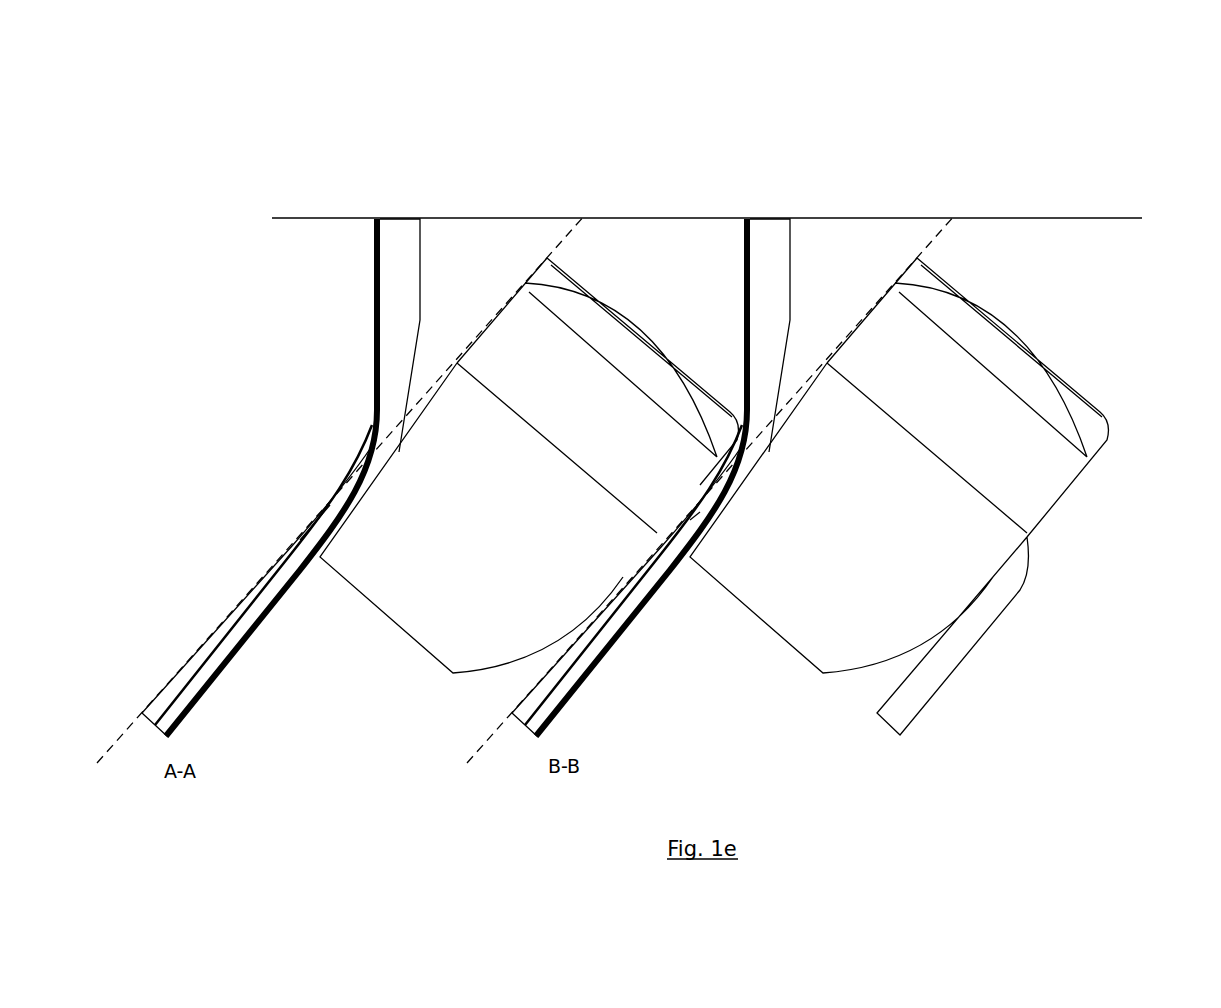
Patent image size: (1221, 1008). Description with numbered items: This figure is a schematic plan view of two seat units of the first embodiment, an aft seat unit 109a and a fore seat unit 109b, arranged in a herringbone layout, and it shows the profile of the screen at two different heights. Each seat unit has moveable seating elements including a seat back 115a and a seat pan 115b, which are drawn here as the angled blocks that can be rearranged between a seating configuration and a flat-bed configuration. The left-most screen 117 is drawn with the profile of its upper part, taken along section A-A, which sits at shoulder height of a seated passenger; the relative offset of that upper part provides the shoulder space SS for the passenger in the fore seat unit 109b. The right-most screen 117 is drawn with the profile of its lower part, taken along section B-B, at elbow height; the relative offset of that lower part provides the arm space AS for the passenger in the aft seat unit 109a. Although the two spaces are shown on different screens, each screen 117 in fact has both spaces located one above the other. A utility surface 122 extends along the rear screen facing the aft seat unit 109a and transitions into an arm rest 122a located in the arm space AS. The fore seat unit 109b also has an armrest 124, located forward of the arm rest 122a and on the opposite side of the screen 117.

The aft seat unit 109a is at (1080, 190).
The fore seat unit 109b is at (668, 198).
The seat back 115a is at (566, 420).
The seat pan 115b is at (452, 564).
The screen 117 is at (388, 278).
The utility surface 122 is at (403, 356).
The arm rest 122a is at (712, 508).
The armrest 124 is at (539, 693).
The shoulder space SS is at (314, 526).
The arm space AS is at (694, 527).